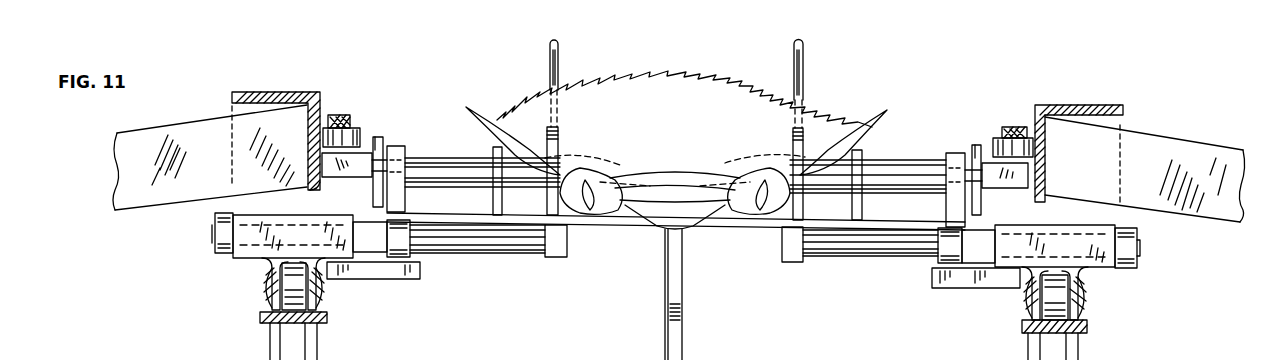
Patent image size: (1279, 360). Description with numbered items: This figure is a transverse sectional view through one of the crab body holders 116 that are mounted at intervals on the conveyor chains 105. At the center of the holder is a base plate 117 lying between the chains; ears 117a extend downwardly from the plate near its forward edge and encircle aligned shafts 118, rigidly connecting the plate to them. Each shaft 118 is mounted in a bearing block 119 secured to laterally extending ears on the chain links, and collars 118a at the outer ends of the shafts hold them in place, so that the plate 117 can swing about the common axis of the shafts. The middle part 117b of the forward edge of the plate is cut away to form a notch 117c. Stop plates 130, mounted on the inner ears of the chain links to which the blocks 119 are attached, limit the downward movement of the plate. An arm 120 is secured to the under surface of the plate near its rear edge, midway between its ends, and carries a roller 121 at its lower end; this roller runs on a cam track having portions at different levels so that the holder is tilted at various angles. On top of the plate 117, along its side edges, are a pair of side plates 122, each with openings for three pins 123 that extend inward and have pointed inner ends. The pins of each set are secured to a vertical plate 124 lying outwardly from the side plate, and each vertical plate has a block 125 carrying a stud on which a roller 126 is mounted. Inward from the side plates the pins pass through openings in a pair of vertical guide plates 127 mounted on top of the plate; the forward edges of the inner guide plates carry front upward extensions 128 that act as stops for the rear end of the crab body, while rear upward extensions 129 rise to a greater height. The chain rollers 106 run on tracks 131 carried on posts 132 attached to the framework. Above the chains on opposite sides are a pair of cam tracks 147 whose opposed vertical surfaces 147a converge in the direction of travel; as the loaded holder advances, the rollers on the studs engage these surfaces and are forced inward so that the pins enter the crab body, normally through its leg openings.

The chain 105 is at (270, 297).
The roller 106 is at (292, 280).
The holder 116 is at (750, 258).
The base plate 117 is at (900, 224).
The ear 117a is at (418, 247).
The middle part 117b is at (573, 215).
The notch 117c is at (597, 218).
The shaft 118 is at (507, 238).
The collar 118a is at (222, 243).
The bearing block 119 is at (247, 230).
The arm 120 is at (670, 324).
The roller 121 is at (660, 359).
The side plate 122 is at (397, 147).
The pin 123 is at (437, 153).
The vertical plate 124 is at (378, 137).
The block 125 is at (362, 178).
The roller 126 is at (353, 128).
The guide plate 127 is at (492, 150).
The front upward extension 128 is at (560, 127).
The rear upward extension 129 is at (550, 52).
The stop plate 130 is at (366, 276).
The track 131 is at (327, 314).
The post 132 is at (304, 353).
The cam track 147 is at (298, 101).
The vertical surface 147a is at (323, 101).